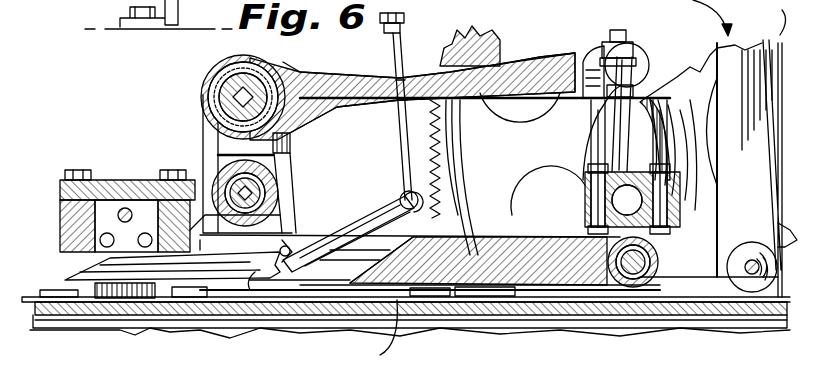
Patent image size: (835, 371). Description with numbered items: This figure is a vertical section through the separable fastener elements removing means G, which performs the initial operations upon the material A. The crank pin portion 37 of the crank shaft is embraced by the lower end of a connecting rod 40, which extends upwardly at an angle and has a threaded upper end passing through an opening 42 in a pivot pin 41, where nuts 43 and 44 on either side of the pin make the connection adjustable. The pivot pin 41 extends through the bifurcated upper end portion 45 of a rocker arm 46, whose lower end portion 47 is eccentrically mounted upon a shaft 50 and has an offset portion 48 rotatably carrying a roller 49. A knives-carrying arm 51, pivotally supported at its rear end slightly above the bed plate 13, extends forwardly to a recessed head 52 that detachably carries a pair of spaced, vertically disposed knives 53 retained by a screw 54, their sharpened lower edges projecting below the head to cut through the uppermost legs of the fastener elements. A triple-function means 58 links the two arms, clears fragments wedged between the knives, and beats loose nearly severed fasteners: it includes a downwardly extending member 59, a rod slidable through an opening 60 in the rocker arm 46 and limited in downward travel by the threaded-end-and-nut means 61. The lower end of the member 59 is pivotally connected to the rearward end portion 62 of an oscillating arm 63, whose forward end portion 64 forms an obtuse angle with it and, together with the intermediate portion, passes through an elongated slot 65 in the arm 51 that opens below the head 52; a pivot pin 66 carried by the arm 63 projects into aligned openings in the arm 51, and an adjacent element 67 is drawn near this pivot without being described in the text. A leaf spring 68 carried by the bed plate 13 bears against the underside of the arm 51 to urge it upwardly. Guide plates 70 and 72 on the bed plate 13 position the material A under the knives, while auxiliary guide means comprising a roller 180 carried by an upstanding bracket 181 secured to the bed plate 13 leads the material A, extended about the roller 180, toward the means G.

The separable fastener elements removing means G is at (374, 74).
The lower end portion of rocker arm 47 is at (282, 85).
The shaft 50 is at (212, 90).
The offset portion 48 is at (288, 152).
The roller 49 is at (272, 184).
The means to limit downward sliding movement 61 is at (405, 18).
The downwardly-extending member 59 is at (400, 130).
The downwardly-extending opening 60 is at (400, 108).
The triple-function means 58 is at (402, 188).
The oscillating arm 63 is at (335, 212).
The rearward end portion of oscillating arm 62 is at (414, 212).
The rocker arm 46 is at (537, 96).
The bifurcated upper end portion 45 is at (572, 56).
The nut 44 is at (657, 87).
The connecting rod 40 is at (590, 160).
The nut 43 is at (638, 32).
The opening in pivot pin 42 is at (608, 48).
The pivot pin 41 is at (636, 58).
The crank pin portion 37 is at (610, 198).
The knives-carrying arm 51 is at (560, 222).
The elongated slot 65 is at (320, 268).
The pivot pin 66 is at (288, 245).
The spring clip 67 is at (285, 250).
The recessed head 52 is at (62, 218).
The screw 54 is at (132, 208).
The forward end portion of oscillating arm 64 is at (120, 270).
The cutters or knives 53 is at (68, 296).
The plate 70 is at (120, 300).
The plate of springy metal 72 is at (168, 300).
The bed plate 13 is at (82, 315).
The means to urge the knives-carrying arm upwardly 68 is at (455, 300).
The material A is at (573, 181).
The upstanding bracket 181 is at (730, 55).
The roller 180 is at (752, 250).